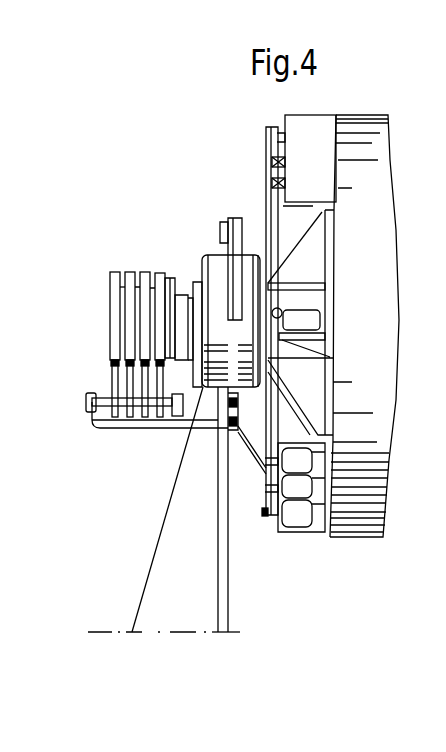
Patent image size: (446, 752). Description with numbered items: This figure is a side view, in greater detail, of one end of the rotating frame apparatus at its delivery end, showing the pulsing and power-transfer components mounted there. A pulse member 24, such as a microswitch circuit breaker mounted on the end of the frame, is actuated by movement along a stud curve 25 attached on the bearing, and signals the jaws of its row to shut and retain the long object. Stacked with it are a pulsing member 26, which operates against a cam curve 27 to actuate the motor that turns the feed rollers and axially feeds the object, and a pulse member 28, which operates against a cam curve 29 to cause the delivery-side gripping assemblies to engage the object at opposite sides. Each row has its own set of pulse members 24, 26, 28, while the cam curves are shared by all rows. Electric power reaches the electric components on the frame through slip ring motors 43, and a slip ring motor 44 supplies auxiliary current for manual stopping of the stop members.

The pulse member 24 is at (291, 517).
The stud curve 25 is at (265, 516).
The pulsing member 26 is at (297, 488).
The cam curve 27 is at (274, 163).
The pulse member 28 is at (305, 460).
The cam curve 29 is at (274, 183).
The slip ring motors 43 is at (131, 271).
The slip ring motor 44 is at (163, 272).